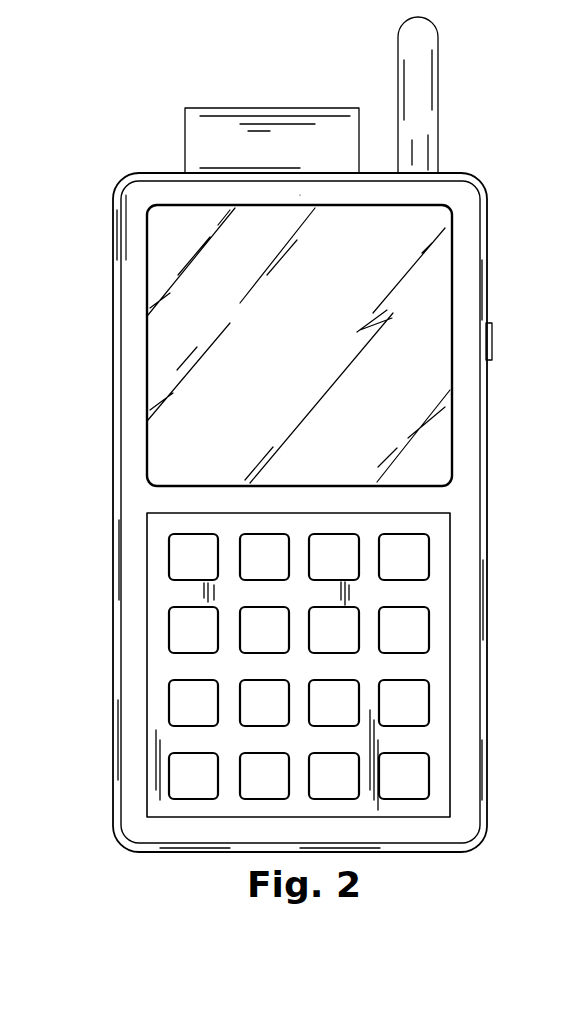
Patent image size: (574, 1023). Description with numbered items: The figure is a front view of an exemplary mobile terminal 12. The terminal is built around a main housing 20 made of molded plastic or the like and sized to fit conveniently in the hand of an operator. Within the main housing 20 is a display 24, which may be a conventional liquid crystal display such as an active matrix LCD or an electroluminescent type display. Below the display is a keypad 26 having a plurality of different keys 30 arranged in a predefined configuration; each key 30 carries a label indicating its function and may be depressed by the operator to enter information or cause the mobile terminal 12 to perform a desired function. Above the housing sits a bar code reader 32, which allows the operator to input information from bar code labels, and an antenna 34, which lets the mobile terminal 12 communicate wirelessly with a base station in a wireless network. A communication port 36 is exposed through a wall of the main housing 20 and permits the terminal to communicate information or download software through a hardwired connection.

The mobile terminal 12 is at (289, 434).
The main housing 20 is at (112, 362).
The display 24 is at (88, 246).
The keypad 26 is at (256, 665).
The key 30 is at (180, 627).
The bar code reader 32 is at (222, 123).
The antenna 34 is at (428, 82).
The communication port 36 is at (492, 340).